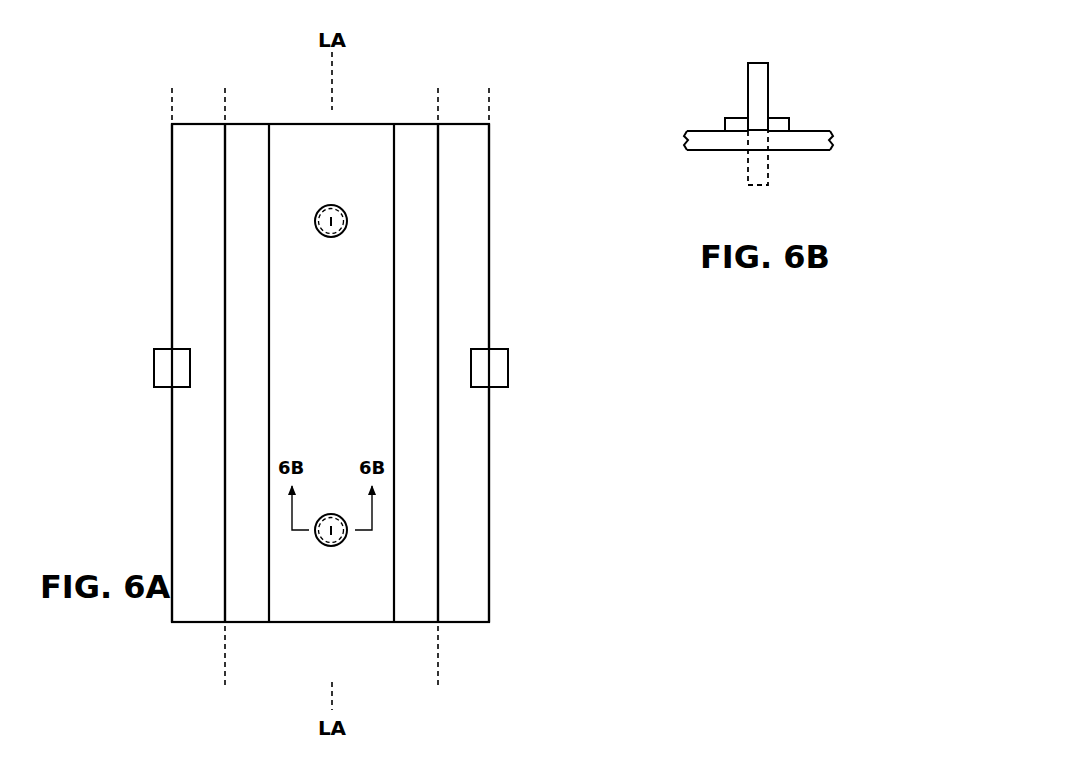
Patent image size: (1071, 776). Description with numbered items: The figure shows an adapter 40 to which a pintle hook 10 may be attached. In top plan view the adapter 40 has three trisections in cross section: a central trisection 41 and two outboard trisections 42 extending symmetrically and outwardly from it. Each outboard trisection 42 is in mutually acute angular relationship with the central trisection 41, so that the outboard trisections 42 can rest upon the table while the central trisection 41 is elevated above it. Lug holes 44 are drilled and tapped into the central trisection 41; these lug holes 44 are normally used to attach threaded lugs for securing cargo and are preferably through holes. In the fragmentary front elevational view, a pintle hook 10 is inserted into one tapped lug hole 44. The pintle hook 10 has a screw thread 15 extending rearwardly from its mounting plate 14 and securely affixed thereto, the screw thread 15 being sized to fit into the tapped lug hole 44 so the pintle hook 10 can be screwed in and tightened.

In FIG. 6B, the pintle hook 10 is at (760, 72).
In FIG. 6B, the mounting plate 14 is at (738, 124).
In FIG. 6B, the screw thread 15 is at (757, 172).
In FIG. 6A, the adapter 40 is at (113, 210).
In FIG. 6A, the central trisection 41 is at (227, 664).
In FIG. 6B, the central trisection 41 is at (818, 140).
In FIG. 6A, the outboard trisection 42 is at (260, 108).
In FIG. 6A, the lug hole 44 is at (348, 221).